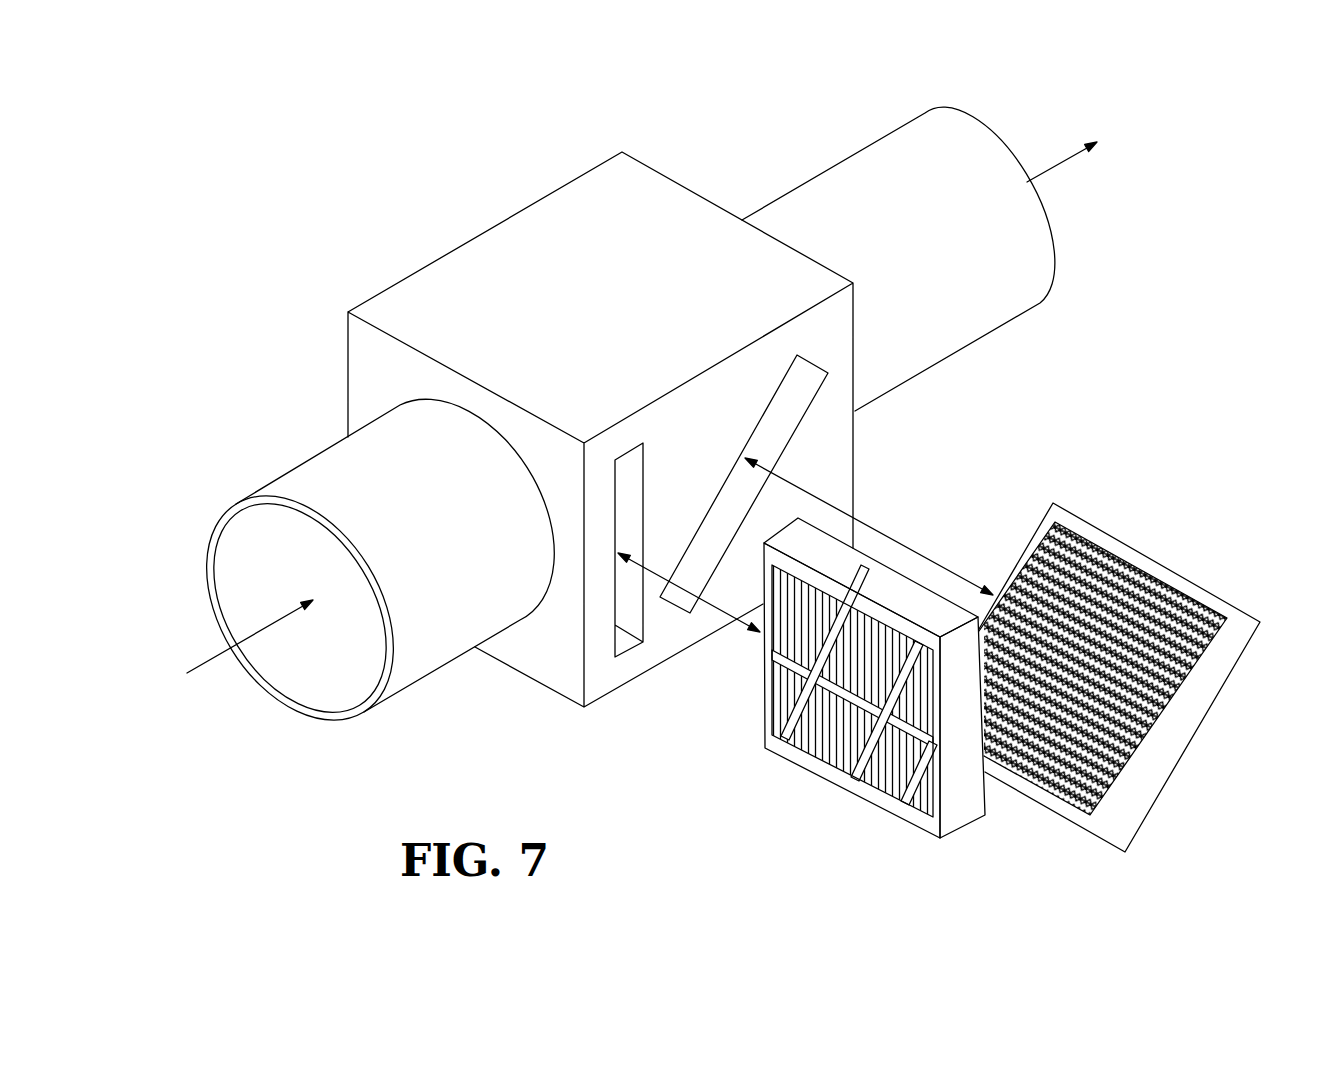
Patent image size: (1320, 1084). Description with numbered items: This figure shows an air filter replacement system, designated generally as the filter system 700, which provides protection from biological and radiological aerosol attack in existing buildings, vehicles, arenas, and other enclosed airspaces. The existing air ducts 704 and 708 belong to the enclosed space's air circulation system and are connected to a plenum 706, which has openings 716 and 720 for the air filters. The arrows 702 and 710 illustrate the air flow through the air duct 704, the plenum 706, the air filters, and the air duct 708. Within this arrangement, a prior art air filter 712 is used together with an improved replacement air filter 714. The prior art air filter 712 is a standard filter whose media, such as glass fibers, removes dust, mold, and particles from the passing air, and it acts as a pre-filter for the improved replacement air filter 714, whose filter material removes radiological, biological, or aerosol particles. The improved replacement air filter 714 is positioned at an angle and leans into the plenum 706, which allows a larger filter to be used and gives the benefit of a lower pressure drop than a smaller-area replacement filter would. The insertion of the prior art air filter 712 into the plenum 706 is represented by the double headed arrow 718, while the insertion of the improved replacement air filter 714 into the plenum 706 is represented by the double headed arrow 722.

The filter system 700 is at (1143, 352).
The arrow 702 is at (213, 660).
The air duct 704 is at (456, 516).
The plenum 706 is at (640, 294).
The air duct 708 is at (922, 216).
The arrow 710 is at (1057, 170).
The prior art air filter 712 is at (810, 738).
The improved replacement air filter 714 is at (1165, 592).
The opening 716 is at (632, 477).
The double headed arrow 718 is at (707, 613).
The opening 720 is at (775, 440).
The double headed arrow 722 is at (922, 552).